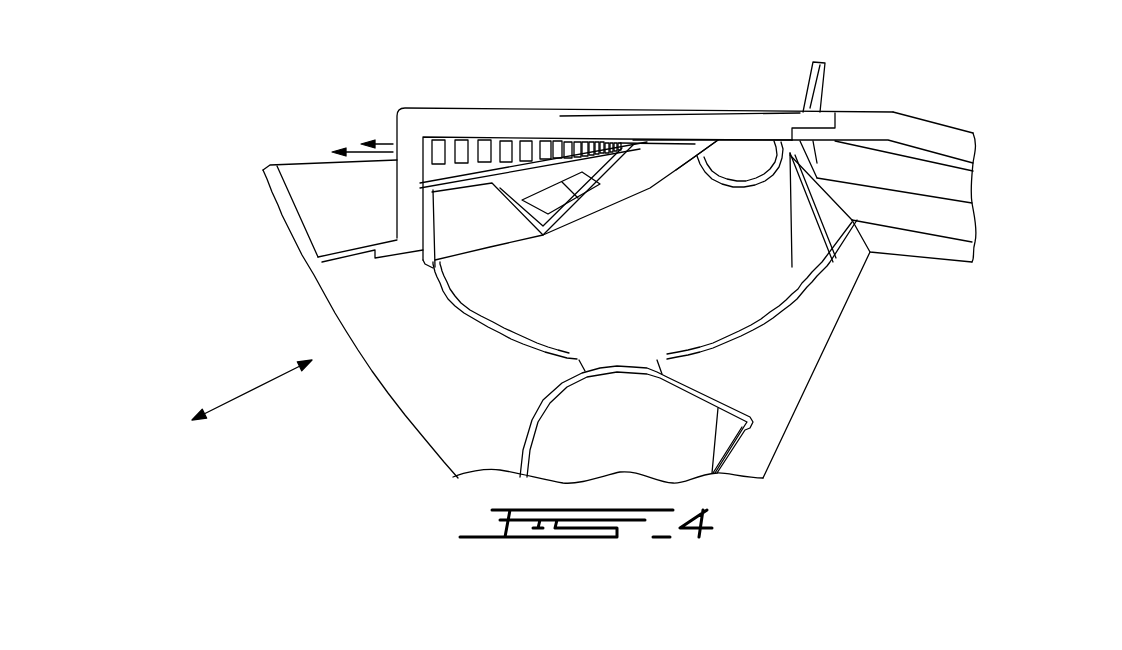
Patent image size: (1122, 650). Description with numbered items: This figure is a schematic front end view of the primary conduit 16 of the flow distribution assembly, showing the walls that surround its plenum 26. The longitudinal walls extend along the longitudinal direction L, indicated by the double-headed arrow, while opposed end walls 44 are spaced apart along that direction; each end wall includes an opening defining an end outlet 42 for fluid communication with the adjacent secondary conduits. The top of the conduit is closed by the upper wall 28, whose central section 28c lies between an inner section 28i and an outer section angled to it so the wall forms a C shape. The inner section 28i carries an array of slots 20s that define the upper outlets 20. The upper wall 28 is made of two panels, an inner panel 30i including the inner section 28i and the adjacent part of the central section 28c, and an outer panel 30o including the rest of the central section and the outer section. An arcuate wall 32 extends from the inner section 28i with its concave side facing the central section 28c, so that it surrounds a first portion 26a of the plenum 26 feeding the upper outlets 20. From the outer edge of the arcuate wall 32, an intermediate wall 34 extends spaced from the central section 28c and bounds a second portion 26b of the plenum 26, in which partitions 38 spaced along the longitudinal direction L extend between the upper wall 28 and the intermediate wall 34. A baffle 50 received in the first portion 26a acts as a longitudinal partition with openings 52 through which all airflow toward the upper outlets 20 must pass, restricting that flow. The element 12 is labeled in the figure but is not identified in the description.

The frame 12 is at (395, 143).
The primary conduit 16 is at (942, 84).
The upper outlets 20 is at (483, 147).
The slots 20s is at (526, 152).
The plenum 26 is at (700, 263).
The first portion of the plenum 26a is at (645, 263).
The second portion of the plenum 26b is at (881, 198).
The upper wall 28 is at (582, 100).
The central section 28c is at (535, 123).
The inner section 28i is at (407, 208).
The inner panel 30i is at (708, 123).
The outer panel 30o is at (872, 127).
The arcuate wall 32 is at (722, 308).
The intermediate wall 34 is at (943, 250).
The partitions 38 is at (942, 183).
The end outlets 42 is at (750, 157).
The end walls 44 is at (437, 382).
The baffle 50 is at (652, 160).
The openings 52 is at (560, 198).
The longitudinal direction L is at (253, 393).